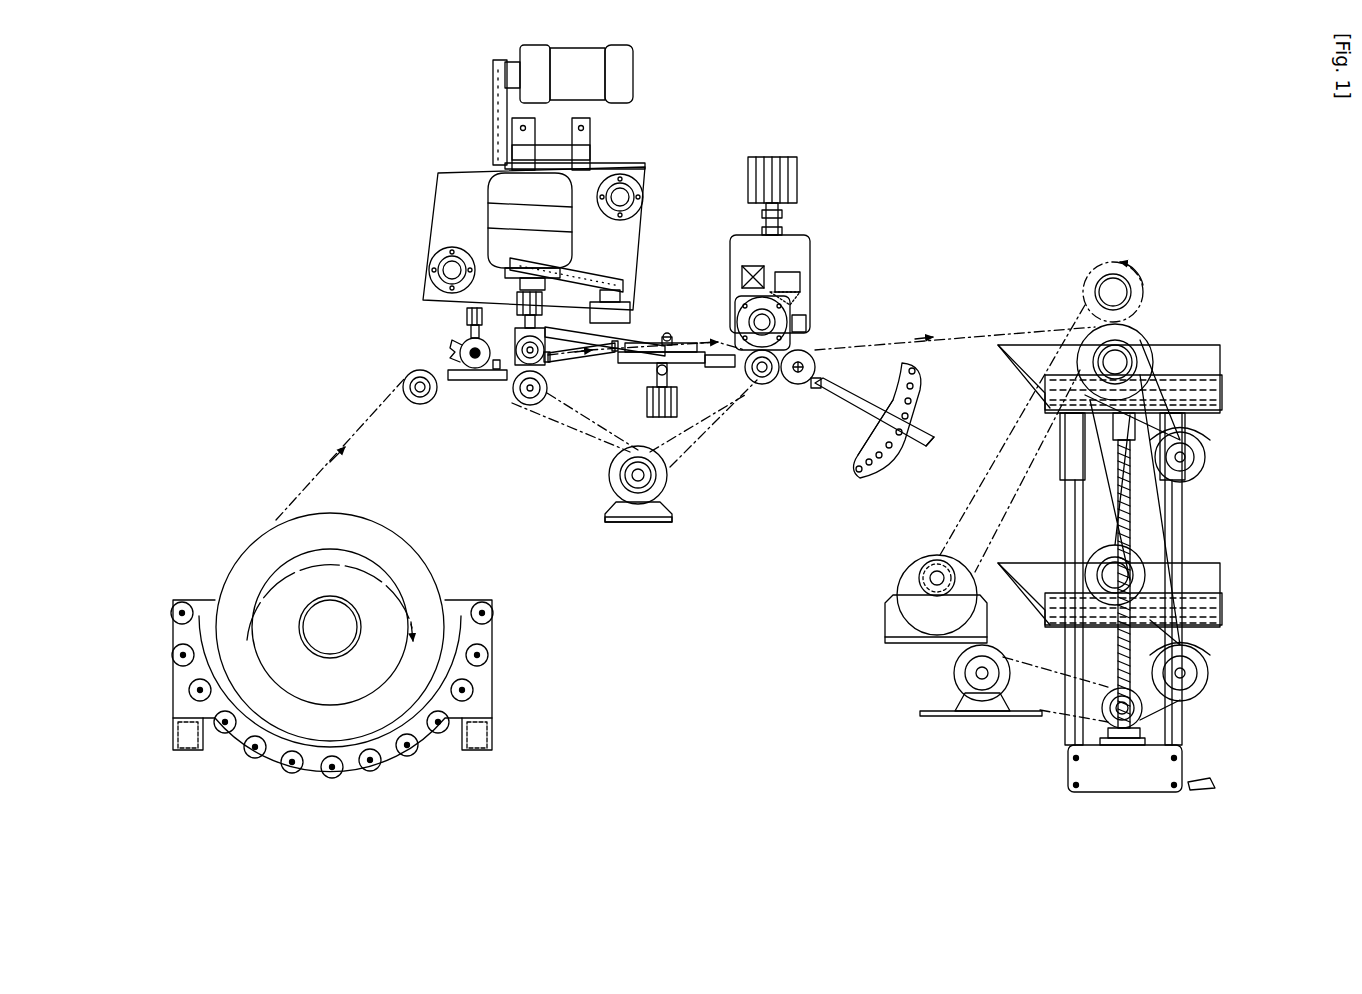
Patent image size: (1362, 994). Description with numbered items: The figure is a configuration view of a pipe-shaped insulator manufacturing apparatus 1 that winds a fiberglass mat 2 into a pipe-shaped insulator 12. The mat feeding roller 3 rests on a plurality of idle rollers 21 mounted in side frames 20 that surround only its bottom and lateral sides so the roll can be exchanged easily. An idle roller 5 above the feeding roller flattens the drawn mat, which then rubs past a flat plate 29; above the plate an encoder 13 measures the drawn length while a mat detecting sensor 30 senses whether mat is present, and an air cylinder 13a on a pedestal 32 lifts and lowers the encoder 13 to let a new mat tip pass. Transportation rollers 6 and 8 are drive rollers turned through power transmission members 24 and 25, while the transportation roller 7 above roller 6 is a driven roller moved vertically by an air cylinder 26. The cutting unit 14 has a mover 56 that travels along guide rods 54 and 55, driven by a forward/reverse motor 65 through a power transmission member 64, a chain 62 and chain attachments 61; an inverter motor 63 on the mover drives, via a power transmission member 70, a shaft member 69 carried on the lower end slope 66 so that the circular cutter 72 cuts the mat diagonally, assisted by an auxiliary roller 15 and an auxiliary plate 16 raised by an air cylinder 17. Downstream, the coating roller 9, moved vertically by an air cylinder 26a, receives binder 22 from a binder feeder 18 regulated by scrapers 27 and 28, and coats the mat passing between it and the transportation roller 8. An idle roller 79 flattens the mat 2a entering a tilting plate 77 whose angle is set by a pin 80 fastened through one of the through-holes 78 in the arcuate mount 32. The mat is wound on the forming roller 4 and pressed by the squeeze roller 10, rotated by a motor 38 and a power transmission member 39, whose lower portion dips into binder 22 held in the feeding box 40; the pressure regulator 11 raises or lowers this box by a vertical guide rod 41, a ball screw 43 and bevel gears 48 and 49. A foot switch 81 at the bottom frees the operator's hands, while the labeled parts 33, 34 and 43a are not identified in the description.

The pipe-shaped insulator manufacturing apparatus 1 is at (283, 183).
The fiberglass mat 2 is at (322, 448).
The fiberglass mat 2a is at (932, 445).
The mat feeding roller 3 is at (415, 572).
The forming roller 4 is at (1098, 290).
The idle roller 5 is at (405, 375).
The transportation roller 6 is at (525, 405).
The transportation roller 7 is at (515, 345).
The transportation roller 8 is at (762, 385).
The coating roller 9 is at (745, 322).
The squeeze roller 10 is at (1140, 340).
The pressure regulator 11 is at (1235, 532).
The pipe-shaped insulator 12 is at (1100, 268).
The encoder 13 is at (460, 350).
The adjusting knob 13a is at (465, 315).
The cutting unit 14 is at (457, 158).
The auxiliary roller 15 is at (670, 333).
The auxiliary plate 16 is at (680, 360).
The air cylinder 17 is at (665, 420).
The binder feeder 18 is at (812, 272).
The side frames 20 is at (492, 703).
The idle rollers 21 is at (488, 656).
The binder 22 is at (640, 505).
The power transmission member 24 is at (585, 438).
The power transmission member 25 is at (712, 440).
The air cylinder 26 is at (517, 302).
The air cylinder 26a is at (780, 160).
The scraper 27 is at (808, 328).
The scraper 28 is at (745, 272).
The flat plate 29 is at (465, 381).
The mat detecting sensor 30 is at (496, 370).
The arcuate mount 32 is at (925, 380).
The roller unit 33 is at (905, 607).
The web path 34 is at (940, 530).
The motor 38 is at (1206, 457).
The power transmission member 39 is at (1210, 432).
The binder feeding box 40 is at (1210, 345).
The vertical guide rod 41 is at (1065, 538).
The ball screw 43 is at (1135, 505).
The spindle head 43a is at (1118, 440).
The bevel gear 48 is at (955, 677).
The bevel gear 49 is at (1058, 718).
The guide rod 54 is at (643, 200).
The guide rod 55 is at (430, 270).
The mover 56 is at (447, 190).
The chain attachments 61 is at (595, 167).
The chain 62 is at (590, 150).
The inverter motor 63 is at (510, 210).
The power transmission member 64 is at (493, 100).
The forward/reverse motor 65 is at (625, 73).
The lower end slope 66 is at (560, 352).
The shaft member 69 is at (615, 312).
The power transmission member 70 is at (605, 278).
The circular cutter 72 is at (610, 340).
The tilting plate 77 is at (870, 420).
The through-holes 78 is at (912, 385).
The idle roller 79 is at (798, 385).
The pin 80 is at (893, 455).
The foot switch 81 is at (1212, 783).